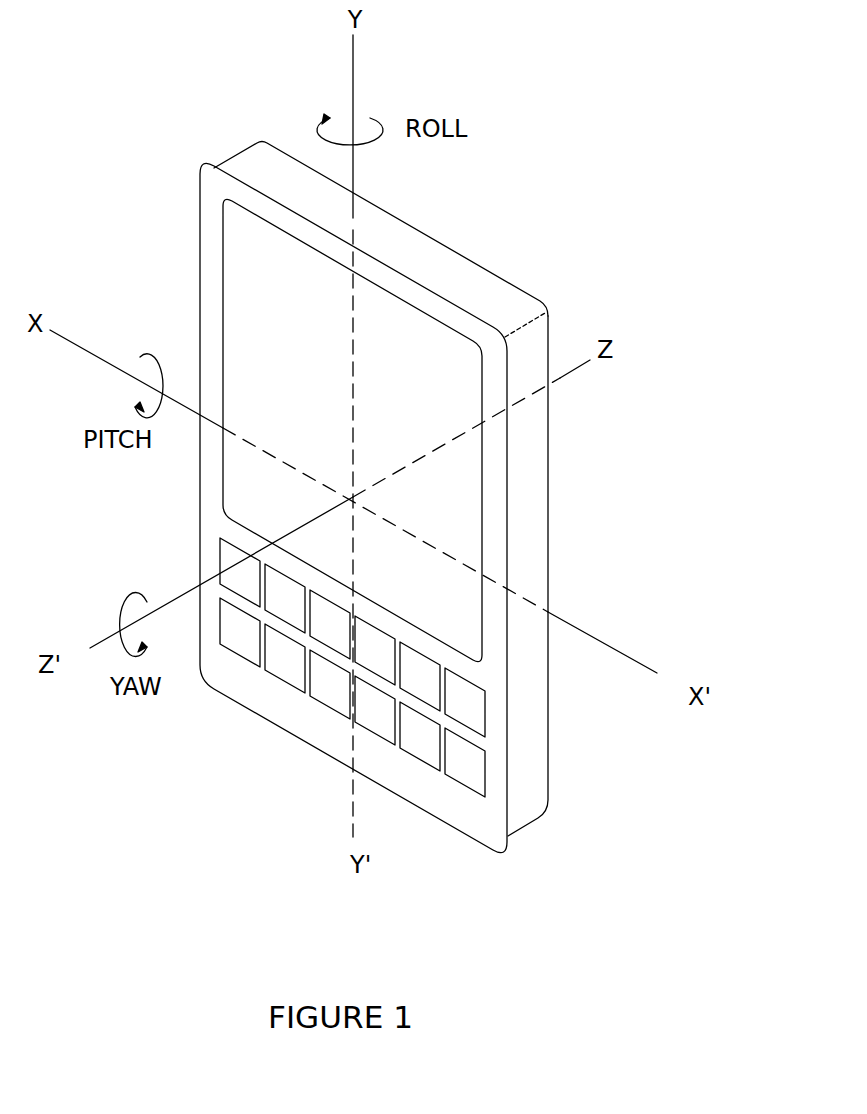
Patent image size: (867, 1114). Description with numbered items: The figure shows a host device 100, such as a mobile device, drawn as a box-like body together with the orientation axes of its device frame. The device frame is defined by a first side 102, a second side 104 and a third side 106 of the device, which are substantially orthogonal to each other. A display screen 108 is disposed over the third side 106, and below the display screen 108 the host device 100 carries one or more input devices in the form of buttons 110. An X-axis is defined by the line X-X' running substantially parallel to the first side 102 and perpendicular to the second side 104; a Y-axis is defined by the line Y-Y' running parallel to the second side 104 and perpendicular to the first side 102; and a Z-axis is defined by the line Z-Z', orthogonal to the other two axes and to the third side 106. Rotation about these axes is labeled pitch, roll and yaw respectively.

The host device 100 is at (383, 521).
The first side 102 is at (382, 240).
The second side 104 is at (532, 755).
The third side 106 is at (495, 645).
The display screen 108 is at (262, 287).
The buttons 110 is at (423, 745).